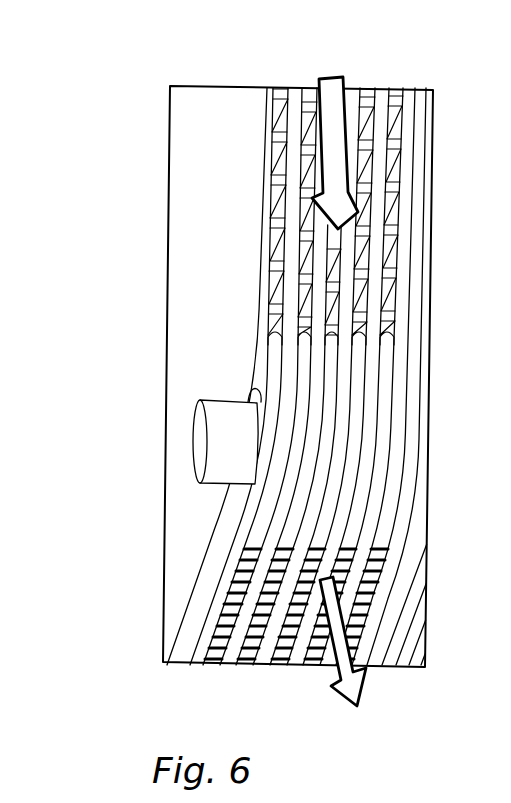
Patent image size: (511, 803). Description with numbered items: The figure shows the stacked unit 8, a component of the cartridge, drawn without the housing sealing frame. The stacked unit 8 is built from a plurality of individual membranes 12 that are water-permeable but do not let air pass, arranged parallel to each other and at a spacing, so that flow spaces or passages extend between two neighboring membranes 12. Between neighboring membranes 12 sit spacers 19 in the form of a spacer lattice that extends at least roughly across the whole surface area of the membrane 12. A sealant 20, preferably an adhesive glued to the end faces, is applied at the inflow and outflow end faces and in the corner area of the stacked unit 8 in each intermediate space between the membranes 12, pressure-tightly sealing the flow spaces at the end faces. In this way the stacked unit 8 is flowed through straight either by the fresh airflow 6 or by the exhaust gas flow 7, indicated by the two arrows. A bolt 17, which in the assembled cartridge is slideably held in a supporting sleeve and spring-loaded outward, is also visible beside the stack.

The fresh airflow 6 is at (363, 684).
The exhaust gas flow 7 is at (328, 102).
The stacked unit 8 is at (408, 86).
The membrane 12 is at (420, 640).
The bolt 17 is at (197, 443).
The spacer 19 is at (233, 664).
The sealant 20 is at (298, 99).